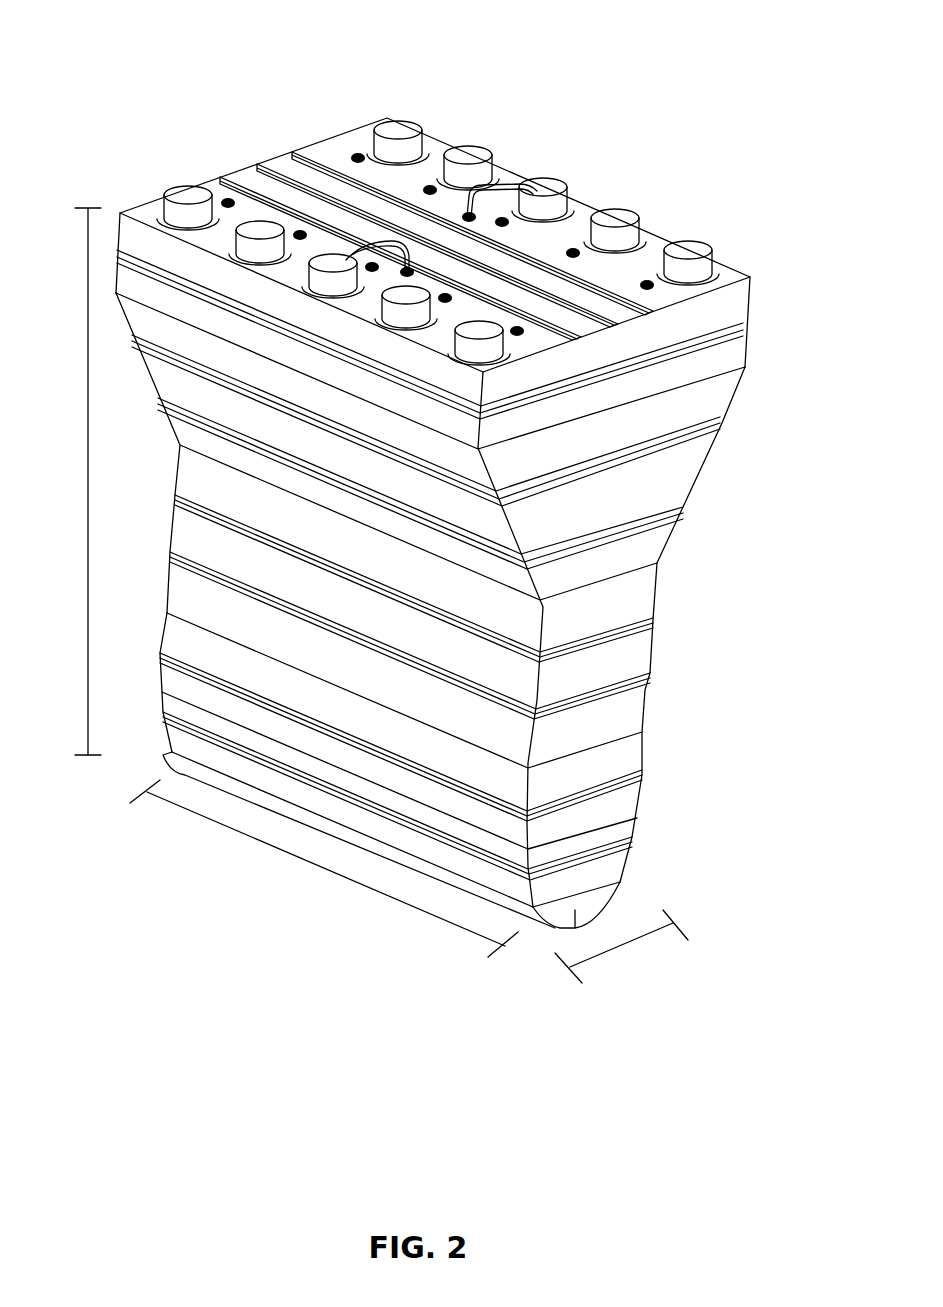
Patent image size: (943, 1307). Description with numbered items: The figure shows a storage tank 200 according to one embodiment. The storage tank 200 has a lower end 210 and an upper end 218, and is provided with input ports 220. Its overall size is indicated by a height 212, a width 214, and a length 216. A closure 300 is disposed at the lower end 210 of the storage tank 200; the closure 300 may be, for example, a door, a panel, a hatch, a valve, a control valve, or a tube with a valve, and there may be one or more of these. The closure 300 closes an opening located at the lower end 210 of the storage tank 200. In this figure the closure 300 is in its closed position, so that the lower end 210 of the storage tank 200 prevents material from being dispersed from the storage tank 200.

The storage tank 200 is at (650, 93).
The lower end 210 is at (592, 838).
The height 212 is at (69, 481).
The width 214 is at (621, 946).
The length 216 is at (324, 868).
The upper end 218 is at (720, 310).
The input ports 220 is at (368, 112).
The closure 300 is at (625, 892).